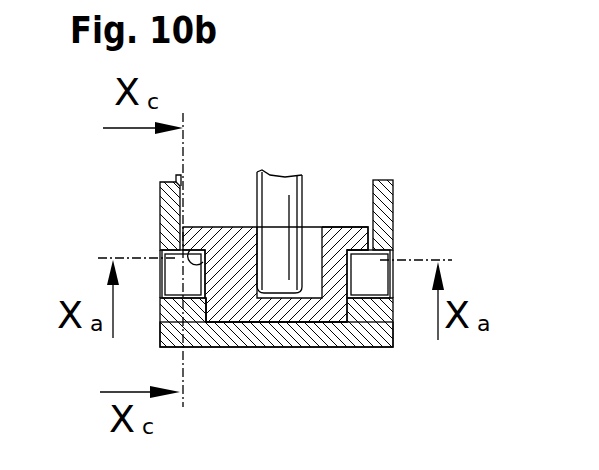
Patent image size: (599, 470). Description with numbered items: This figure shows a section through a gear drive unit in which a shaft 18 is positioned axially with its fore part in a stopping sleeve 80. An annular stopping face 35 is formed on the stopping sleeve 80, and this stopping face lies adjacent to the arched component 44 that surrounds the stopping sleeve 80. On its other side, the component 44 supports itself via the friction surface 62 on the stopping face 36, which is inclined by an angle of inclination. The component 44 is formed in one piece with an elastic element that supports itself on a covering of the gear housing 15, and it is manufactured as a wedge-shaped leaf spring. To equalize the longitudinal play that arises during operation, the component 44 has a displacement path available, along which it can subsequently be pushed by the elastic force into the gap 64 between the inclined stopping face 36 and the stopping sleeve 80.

The gear housing 15 is at (270, 347).
The shaft 18 is at (292, 178).
The annular stopping face 35 is at (217, 227).
The stopping face 36 is at (173, 296).
The component 44 is at (384, 258).
The friction surface 62 is at (187, 302).
The gap 64 is at (197, 307).
The stopping sleeve 80 is at (348, 228).